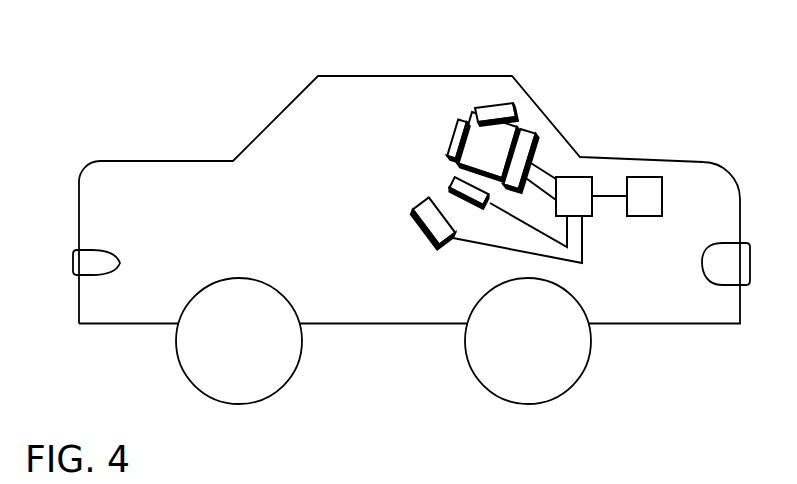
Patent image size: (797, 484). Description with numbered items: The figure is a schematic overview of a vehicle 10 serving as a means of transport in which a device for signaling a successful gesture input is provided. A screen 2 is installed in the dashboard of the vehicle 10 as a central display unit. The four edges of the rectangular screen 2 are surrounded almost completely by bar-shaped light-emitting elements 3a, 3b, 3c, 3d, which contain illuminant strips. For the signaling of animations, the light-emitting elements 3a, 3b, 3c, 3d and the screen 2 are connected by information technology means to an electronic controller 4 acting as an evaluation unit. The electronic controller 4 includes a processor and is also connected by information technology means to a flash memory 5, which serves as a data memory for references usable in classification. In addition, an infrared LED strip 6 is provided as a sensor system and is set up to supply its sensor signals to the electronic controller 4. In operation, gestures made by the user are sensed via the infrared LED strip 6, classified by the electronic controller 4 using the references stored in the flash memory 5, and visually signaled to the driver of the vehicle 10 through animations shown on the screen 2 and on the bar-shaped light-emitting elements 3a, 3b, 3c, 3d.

The vehicle 10 is at (186, 100).
The screen 2 is at (480, 145).
The light-emitting element 3a is at (503, 112).
The light-emitting element 3b is at (455, 184).
The light-emitting element 3c is at (528, 140).
The light-emitting element 3d is at (457, 133).
The electronic controller 4 is at (581, 188).
The flash memory 5 is at (652, 187).
The infrared LED strip 6 is at (423, 208).